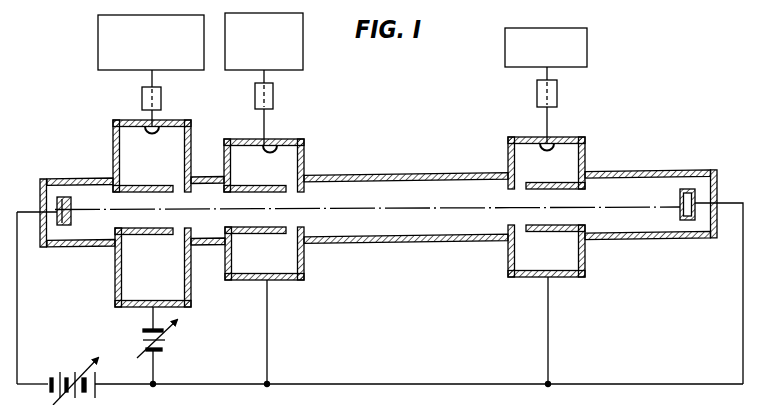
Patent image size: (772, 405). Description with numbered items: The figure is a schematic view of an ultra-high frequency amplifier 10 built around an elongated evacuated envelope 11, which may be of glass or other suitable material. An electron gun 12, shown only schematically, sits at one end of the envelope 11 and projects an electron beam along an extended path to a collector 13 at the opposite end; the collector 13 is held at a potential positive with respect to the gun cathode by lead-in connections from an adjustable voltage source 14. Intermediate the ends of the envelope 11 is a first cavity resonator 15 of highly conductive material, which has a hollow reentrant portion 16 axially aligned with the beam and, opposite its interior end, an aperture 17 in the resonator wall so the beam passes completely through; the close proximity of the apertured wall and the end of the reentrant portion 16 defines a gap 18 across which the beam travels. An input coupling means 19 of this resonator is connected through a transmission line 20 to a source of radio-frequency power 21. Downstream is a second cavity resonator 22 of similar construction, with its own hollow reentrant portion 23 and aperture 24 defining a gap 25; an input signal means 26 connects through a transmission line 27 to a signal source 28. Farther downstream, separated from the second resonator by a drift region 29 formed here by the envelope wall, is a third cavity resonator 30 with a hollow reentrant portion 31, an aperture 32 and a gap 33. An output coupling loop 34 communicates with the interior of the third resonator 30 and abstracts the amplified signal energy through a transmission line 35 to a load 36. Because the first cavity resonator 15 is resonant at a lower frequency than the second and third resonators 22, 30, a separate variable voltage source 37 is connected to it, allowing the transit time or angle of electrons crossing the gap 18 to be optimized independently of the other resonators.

The ultra-high frequency amplifier 10 is at (412, 288).
The evacuated envelope 11 is at (52, 248).
The electron gun 12 is at (62, 197).
The collector 13 is at (688, 222).
The adjustable voltage source 14 is at (70, 372).
The first cavity resonator 15 is at (191, 139).
The hollow reentrant portion 16 is at (136, 228).
The aperture 17 is at (178, 214).
The gap 18 is at (179, 184).
The input coupling means 19 is at (153, 134).
The transmission line 20 is at (161, 97).
The source of radio-frequency power 21 is at (98, 52).
The second cavity resonator 22 is at (305, 152).
The hollow reentrant portion 23 is at (262, 228).
The aperture 24 is at (292, 214).
The gap 25 is at (291, 190).
The input signal means 26 is at (266, 152).
The transmission line 27 is at (273, 96).
The signal source 28 is at (303, 40).
The drift region 29 is at (386, 181).
The third cavity resonator 30 is at (586, 146).
The hollow reentrant portion 31 is at (530, 226).
The aperture 32 is at (558, 212).
The gap 33 is at (523, 184).
The output coupling loop 34 is at (550, 146).
The transmission line 35 is at (557, 90).
The load 36 is at (588, 40).
The variable voltage source 37 is at (170, 338).